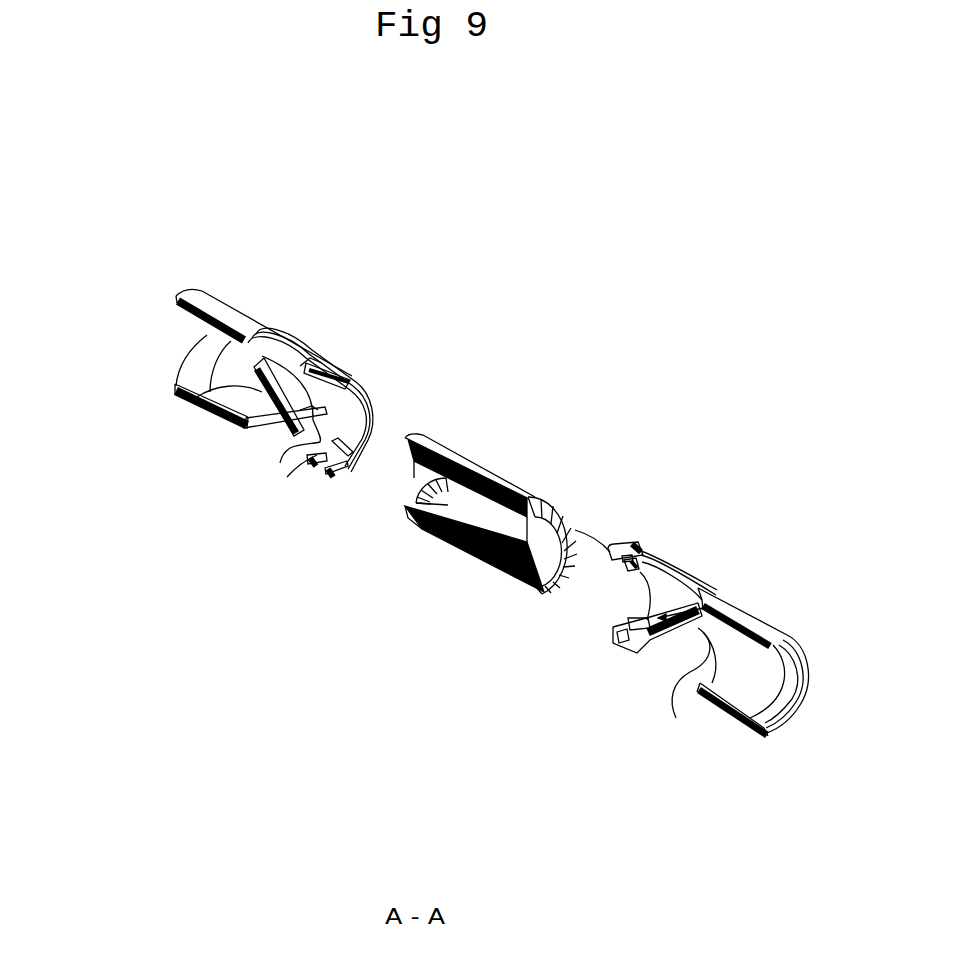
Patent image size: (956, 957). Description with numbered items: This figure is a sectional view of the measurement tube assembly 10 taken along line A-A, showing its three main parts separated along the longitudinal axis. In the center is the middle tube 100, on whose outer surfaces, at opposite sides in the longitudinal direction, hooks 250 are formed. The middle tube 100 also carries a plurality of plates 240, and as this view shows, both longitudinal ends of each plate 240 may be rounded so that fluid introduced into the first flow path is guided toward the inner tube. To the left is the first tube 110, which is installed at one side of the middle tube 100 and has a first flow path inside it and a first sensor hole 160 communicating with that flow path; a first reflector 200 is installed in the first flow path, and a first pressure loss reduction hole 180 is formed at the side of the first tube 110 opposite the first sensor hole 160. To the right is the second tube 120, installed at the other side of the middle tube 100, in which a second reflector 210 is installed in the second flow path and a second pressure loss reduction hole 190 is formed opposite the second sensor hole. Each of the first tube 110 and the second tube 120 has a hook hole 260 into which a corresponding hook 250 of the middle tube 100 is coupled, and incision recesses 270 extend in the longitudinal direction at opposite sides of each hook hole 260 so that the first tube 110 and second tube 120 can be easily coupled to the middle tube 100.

The battery module assembly 10 is at (104, 130).
The middle tube 100 is at (503, 455).
The first tube 110 is at (265, 302).
The second tube 120 is at (752, 603).
The first sensor hole 160 is at (283, 345).
The first pressure loss reduction hole 180 is at (303, 440).
The second pressure loss reduction hole 190 is at (706, 648).
The first reflector 200 is at (200, 400).
The second reflector 210 is at (613, 630).
The plates 240 is at (574, 528).
The hooks 250 is at (412, 432).
The hook hole 260 is at (318, 377).
The incision recesses 270 is at (343, 383).